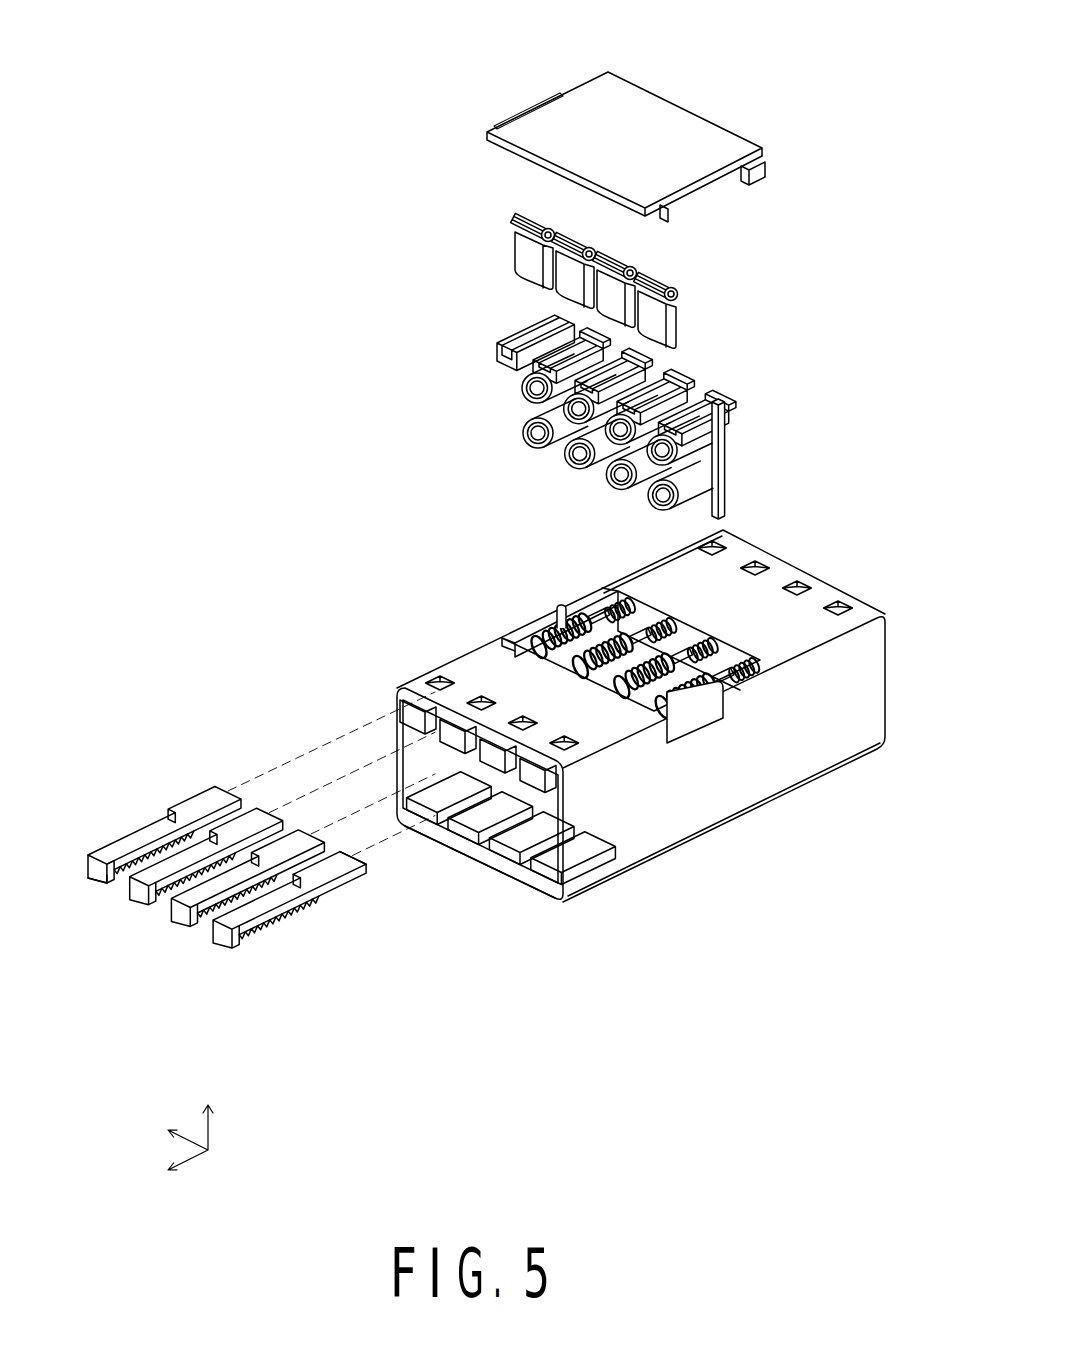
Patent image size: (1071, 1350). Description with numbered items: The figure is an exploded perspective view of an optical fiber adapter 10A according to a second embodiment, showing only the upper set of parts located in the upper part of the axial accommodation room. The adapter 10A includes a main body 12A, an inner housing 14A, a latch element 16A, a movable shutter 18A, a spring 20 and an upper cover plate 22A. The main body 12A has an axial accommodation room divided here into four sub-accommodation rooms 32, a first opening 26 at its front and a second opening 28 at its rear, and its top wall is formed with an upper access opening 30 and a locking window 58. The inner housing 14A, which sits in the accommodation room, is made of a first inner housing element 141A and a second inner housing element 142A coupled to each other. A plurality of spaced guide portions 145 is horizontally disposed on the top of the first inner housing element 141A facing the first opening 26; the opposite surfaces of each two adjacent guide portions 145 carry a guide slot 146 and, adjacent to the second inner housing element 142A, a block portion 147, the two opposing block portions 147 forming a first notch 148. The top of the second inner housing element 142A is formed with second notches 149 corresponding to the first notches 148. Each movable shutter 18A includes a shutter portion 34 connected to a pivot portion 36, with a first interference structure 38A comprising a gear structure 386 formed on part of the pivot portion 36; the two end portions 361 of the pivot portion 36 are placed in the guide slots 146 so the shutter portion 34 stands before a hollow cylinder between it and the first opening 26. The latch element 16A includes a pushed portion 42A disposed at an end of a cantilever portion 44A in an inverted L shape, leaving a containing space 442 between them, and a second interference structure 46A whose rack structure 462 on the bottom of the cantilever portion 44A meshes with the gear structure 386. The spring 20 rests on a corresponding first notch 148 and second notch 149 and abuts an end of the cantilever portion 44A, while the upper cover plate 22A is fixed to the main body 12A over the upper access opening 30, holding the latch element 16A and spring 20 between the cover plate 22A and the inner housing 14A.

The optical fiber adapter 10A is at (145, 26).
The upper cover plate 22A is at (658, 92).
The movable shutter 18A is at (601, 278).
The gear structure 386 is at (653, 264).
The first interference structure 38A is at (708, 290).
The pivot portion 36 is at (678, 296).
The end portions 361 is at (677, 300).
The shutter portion 34 is at (664, 330).
The inner housing 14A is at (636, 417).
The guide portions 145 is at (752, 380).
The first notch 148 is at (663, 388).
The block portion 147 is at (697, 394).
The guide slot 146 is at (670, 410).
The first inner housing element 141A is at (717, 473).
The main body 12A is at (667, 739).
The second opening 28 is at (887, 639).
The locking window 58 is at (440, 678).
The upper access opening 30 is at (513, 629).
The sub-accommodation rooms 32 is at (468, 836).
The first opening 26 is at (520, 904).
The second notches 149 is at (592, 608).
The second inner housing element 142A is at (559, 606).
The spring 20 is at (716, 698).
The latch element 16A is at (232, 853).
The cantilever portion 44A is at (108, 852).
The pushed portion 42A is at (93, 879).
The containing space 442 is at (244, 945).
The second interference structure 46A is at (289, 933).
The rack structure 462 is at (312, 902).